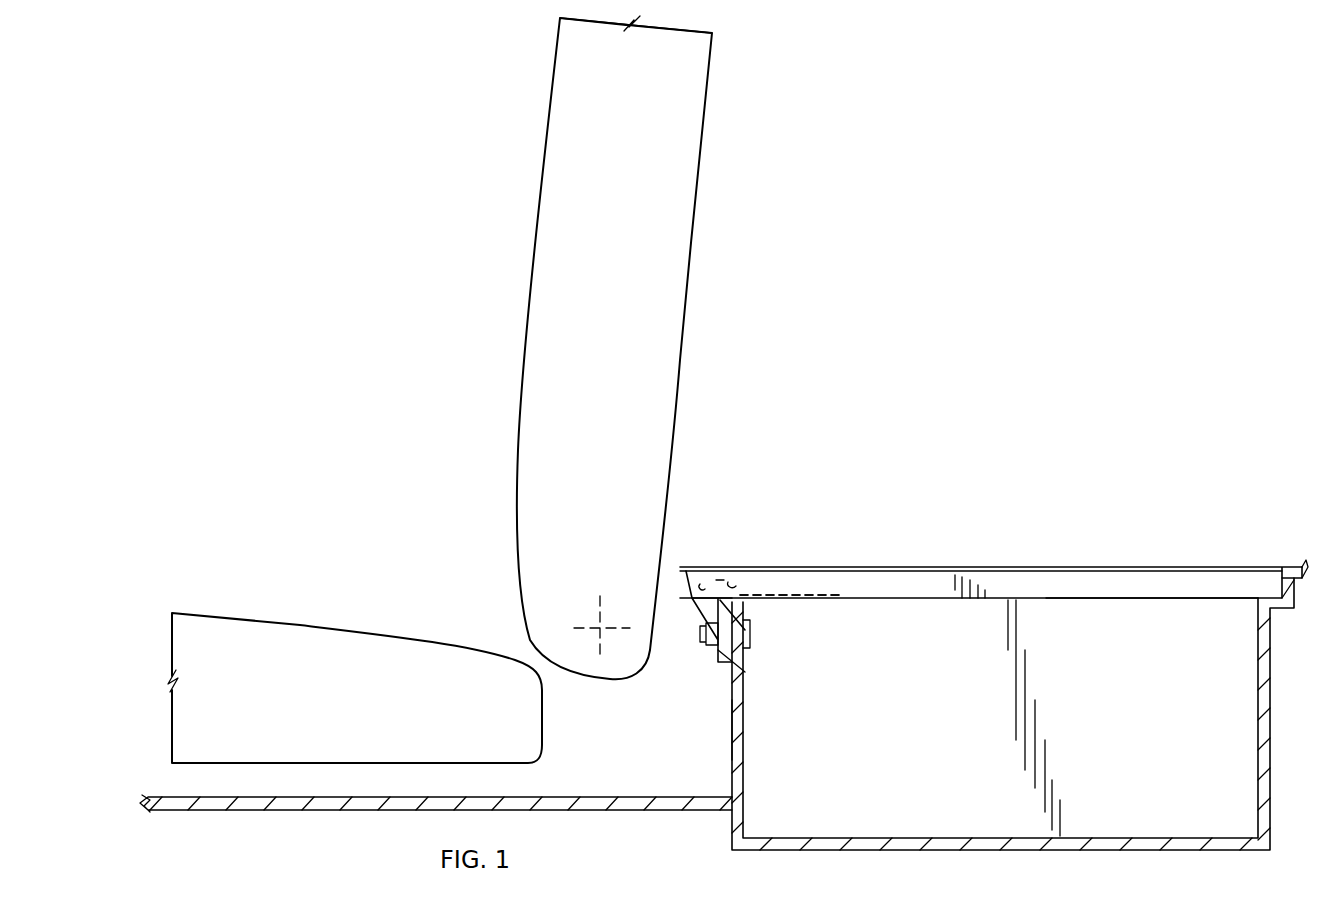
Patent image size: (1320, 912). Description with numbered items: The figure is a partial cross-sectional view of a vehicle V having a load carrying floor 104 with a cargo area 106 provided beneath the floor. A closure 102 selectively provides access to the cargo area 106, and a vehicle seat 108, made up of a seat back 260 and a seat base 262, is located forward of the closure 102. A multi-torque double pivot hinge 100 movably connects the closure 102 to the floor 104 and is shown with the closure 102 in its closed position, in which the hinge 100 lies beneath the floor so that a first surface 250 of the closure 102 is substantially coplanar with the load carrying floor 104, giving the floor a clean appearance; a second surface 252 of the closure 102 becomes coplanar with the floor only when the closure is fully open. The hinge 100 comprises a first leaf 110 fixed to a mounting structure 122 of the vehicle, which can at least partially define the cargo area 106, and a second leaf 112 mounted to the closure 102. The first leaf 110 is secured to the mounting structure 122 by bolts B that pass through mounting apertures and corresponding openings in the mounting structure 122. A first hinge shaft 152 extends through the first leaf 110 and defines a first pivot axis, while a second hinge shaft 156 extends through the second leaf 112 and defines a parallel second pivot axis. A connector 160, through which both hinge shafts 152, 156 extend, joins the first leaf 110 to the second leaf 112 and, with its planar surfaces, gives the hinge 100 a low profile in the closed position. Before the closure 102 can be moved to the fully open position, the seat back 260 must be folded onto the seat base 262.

The multi-torque double pivot hinge 100 is at (696, 660).
The closure 102 is at (925, 584).
The load carrying floor 104 is at (1300, 565).
The cargo area 106 is at (868, 812).
The vehicle seat 108 is at (485, 445).
The first leaf 110 is at (732, 655).
The second leaf 112 is at (808, 604).
The mounting structure 122 is at (743, 735).
The first hinge shaft 152 is at (703, 582).
The second hinge shaft 156 is at (740, 574).
The connector 160 is at (722, 572).
The first surface 250 is at (867, 568).
The second surface 252 is at (1048, 600).
The seat back 260 is at (548, 285).
The seat base 262 is at (288, 632).
The bolts B is at (752, 632).
The vehicle V is at (908, 320).